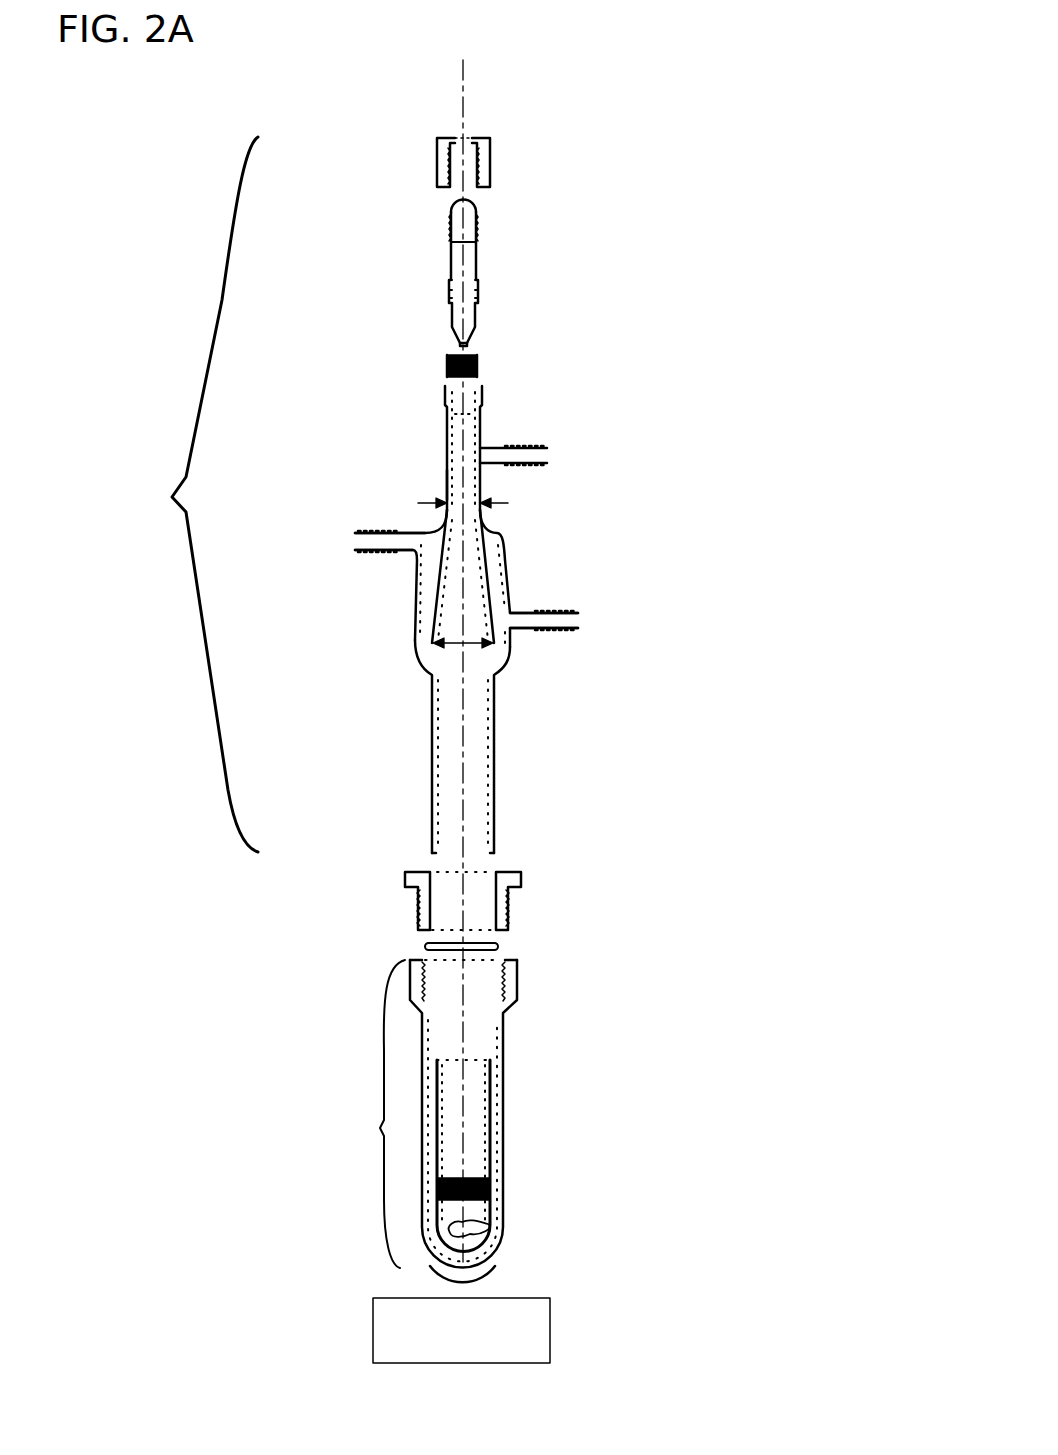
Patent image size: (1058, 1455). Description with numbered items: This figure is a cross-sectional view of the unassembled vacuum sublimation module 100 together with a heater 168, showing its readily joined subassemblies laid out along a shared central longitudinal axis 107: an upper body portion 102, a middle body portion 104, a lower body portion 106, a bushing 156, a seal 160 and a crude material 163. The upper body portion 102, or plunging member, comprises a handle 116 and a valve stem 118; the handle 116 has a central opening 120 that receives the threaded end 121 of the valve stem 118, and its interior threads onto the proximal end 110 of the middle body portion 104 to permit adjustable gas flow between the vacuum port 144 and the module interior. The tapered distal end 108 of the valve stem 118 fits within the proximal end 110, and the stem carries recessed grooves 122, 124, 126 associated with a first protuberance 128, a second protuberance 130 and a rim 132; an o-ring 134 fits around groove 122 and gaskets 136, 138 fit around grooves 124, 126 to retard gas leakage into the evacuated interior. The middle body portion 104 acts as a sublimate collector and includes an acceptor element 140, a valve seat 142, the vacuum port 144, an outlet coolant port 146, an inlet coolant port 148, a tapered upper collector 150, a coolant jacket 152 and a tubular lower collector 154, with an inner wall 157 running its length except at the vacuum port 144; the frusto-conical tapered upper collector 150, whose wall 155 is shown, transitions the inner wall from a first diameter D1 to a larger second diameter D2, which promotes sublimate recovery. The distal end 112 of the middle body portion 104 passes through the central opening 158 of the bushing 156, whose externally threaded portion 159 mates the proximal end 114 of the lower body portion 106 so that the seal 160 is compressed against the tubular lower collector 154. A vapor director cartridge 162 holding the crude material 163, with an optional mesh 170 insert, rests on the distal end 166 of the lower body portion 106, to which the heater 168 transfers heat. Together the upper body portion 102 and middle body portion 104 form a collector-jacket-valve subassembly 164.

The vacuum sublimation module 100 is at (724, 232).
The upper body portion 102 is at (514, 223).
The middle body portion 104 is at (566, 577).
The lower body portion 106 is at (383, 1128).
The central longitudinal axis 107 is at (462, 95).
The distal end of the upper body portion 108 is at (456, 344).
The proximal end of the middle body portion 110 is at (446, 395).
The distal end of the middle body portion 112 is at (473, 840).
The proximal end of the lower body portion 114 is at (480, 973).
The handle 116 is at (440, 160).
The valve stem 118 is at (451, 263).
The central opening 120 is at (467, 138).
The threaded end 121 is at (457, 207).
The recessed groove 122 is at (450, 280).
The recessed groove 124 is at (449, 290).
The recessed groove 126 is at (449, 297).
The first protuberance 128 is at (478, 282).
The second protuberance 130 is at (478, 292).
The rim 132 is at (478, 300).
The o-ring 134 is at (447, 362).
The gasket 136 is at (478, 360).
The gasket 138 is at (478, 373).
The acceptor element 140 is at (463, 412).
The valve seat 142 is at (468, 483).
The vacuum port 144 is at (515, 464).
The outlet coolant port 146 is at (388, 551).
The inlet coolant port 148 is at (552, 628).
The tapered upper collector 150 is at (440, 570).
The coolant jacket 152 is at (503, 543).
The tubular lower collector 154 is at (493, 753).
The insert wall 155 is at (483, 583).
The bushing 156 is at (404, 902).
The inner wall 157 is at (432, 742).
The central opening 158 is at (473, 867).
The externally threaded portion 159 is at (508, 902).
The seal 160 is at (433, 947).
The vapor director cartridge 162 is at (488, 1135).
The crude material 163 is at (487, 1223).
The collector-jacket-valve subassembly 164 is at (165, 497).
The distal end of the lower body portion 166 is at (438, 1262).
The heater 168 is at (525, 1295).
The mesh 170 is at (487, 1180).
The first diameter D1 is at (483, 505).
The second diameter D2 is at (457, 647).